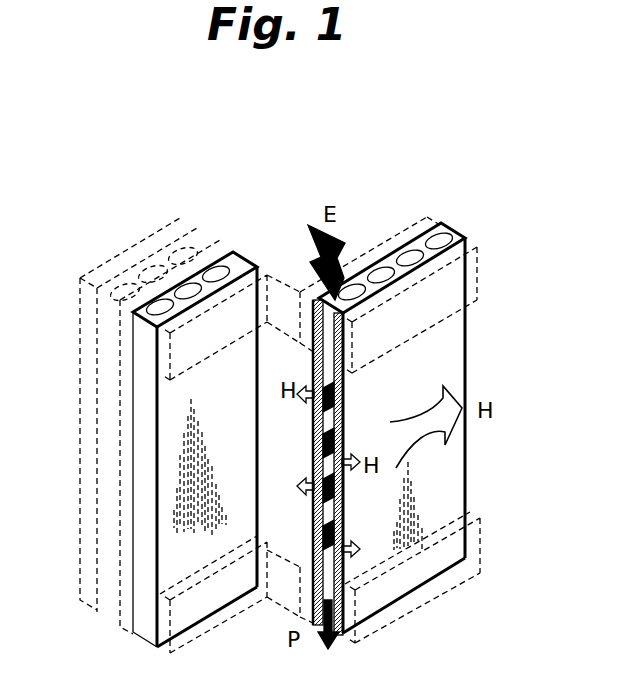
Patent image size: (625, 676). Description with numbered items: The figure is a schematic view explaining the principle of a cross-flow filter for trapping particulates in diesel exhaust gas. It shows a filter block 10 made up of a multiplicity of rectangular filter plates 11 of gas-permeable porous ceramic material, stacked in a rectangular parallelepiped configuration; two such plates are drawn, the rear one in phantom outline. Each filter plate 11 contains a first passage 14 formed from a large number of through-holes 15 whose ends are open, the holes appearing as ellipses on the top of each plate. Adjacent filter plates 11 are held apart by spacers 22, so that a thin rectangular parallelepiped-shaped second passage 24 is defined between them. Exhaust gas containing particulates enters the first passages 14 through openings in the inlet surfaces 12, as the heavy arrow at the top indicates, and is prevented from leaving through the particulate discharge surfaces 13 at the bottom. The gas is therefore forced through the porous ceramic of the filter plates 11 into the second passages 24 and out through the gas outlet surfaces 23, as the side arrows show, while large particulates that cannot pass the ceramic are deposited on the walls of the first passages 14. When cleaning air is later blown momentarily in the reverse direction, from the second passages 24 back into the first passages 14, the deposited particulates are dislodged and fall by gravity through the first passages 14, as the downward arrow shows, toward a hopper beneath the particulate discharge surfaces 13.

The filter block 10 is at (144, 214).
The filter plate 11 is at (100, 362).
The inlet surface 12 is at (233, 264).
The particulate discharge surface 13 is at (147, 640).
The first passage 14 is at (248, 172).
The through-hole 15 is at (177, 290).
The spacer 22 is at (422, 222).
The gas outlet surface 23 is at (467, 347).
The second passage 24 is at (120, 408).